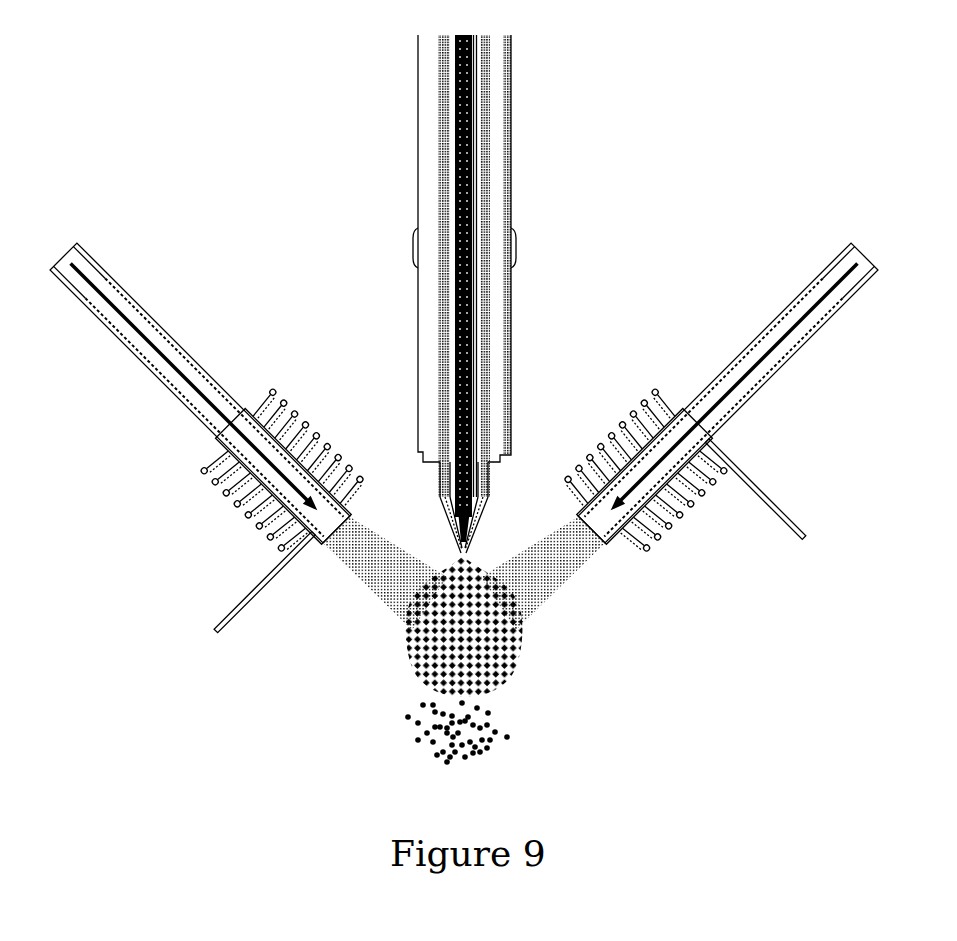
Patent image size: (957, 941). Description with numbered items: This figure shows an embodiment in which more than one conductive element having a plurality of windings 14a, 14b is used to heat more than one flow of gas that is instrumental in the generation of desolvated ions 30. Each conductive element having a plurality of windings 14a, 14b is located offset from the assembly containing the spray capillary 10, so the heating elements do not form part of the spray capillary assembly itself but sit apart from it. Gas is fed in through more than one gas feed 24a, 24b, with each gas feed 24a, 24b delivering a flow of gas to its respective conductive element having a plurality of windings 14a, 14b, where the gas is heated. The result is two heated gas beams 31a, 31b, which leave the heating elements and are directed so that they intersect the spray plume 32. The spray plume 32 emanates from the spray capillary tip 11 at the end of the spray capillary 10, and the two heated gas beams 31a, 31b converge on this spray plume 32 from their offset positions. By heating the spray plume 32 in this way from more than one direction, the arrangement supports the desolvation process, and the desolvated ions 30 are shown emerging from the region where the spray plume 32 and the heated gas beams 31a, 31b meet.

The spray capillary 10 is at (472, 186).
The spray capillary tip 11 is at (480, 514).
The conductive element having a plurality of windings 14a is at (247, 502).
The conductive element having a plurality of windings 14b is at (680, 502).
The gas feed 24a is at (181, 385).
The gas feed 24b is at (743, 385).
The desolvated ions 30 is at (447, 732).
The heated gas beam 31a is at (385, 573).
The heated gas beam 31b is at (547, 573).
The spray plume 32 is at (475, 626).